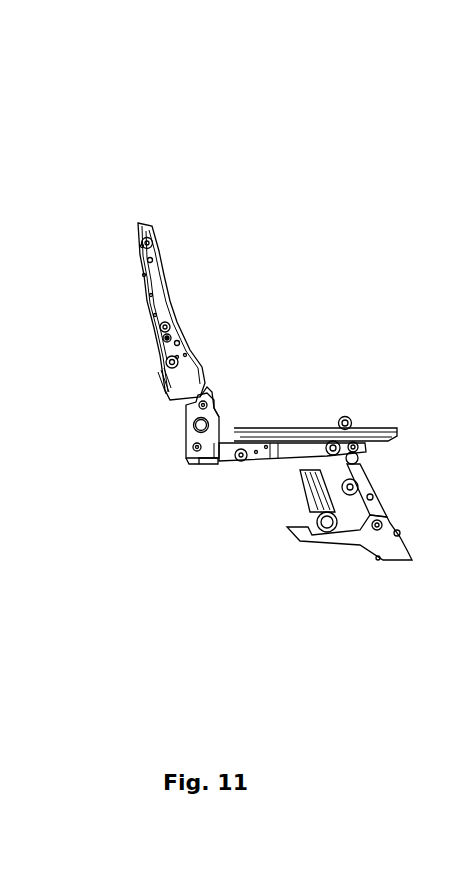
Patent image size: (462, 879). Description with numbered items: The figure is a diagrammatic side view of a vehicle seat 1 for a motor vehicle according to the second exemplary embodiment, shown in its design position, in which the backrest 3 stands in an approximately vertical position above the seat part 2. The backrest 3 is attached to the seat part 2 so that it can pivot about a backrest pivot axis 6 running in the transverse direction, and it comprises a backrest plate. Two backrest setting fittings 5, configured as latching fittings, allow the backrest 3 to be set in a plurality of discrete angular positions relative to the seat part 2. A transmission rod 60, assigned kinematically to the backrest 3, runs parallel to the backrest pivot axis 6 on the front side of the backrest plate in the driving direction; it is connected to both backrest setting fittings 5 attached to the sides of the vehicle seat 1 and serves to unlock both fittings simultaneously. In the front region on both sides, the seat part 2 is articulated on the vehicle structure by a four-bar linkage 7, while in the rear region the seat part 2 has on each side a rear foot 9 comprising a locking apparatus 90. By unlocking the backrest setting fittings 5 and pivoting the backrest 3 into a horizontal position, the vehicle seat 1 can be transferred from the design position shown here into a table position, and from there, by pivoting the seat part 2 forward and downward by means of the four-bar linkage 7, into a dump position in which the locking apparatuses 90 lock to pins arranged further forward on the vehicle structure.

The vehicle seat 1 is at (186, 131).
The seat part 2 is at (323, 437).
The backrest 3 is at (155, 290).
The backrest setting fitting 5 is at (178, 345).
The backrest pivot axis 6 is at (186, 374).
The four-bar linkage 7 is at (356, 524).
The rear foot 9 is at (212, 460).
The transmission rod 60 is at (167, 338).
The locking apparatus 90 is at (203, 462).